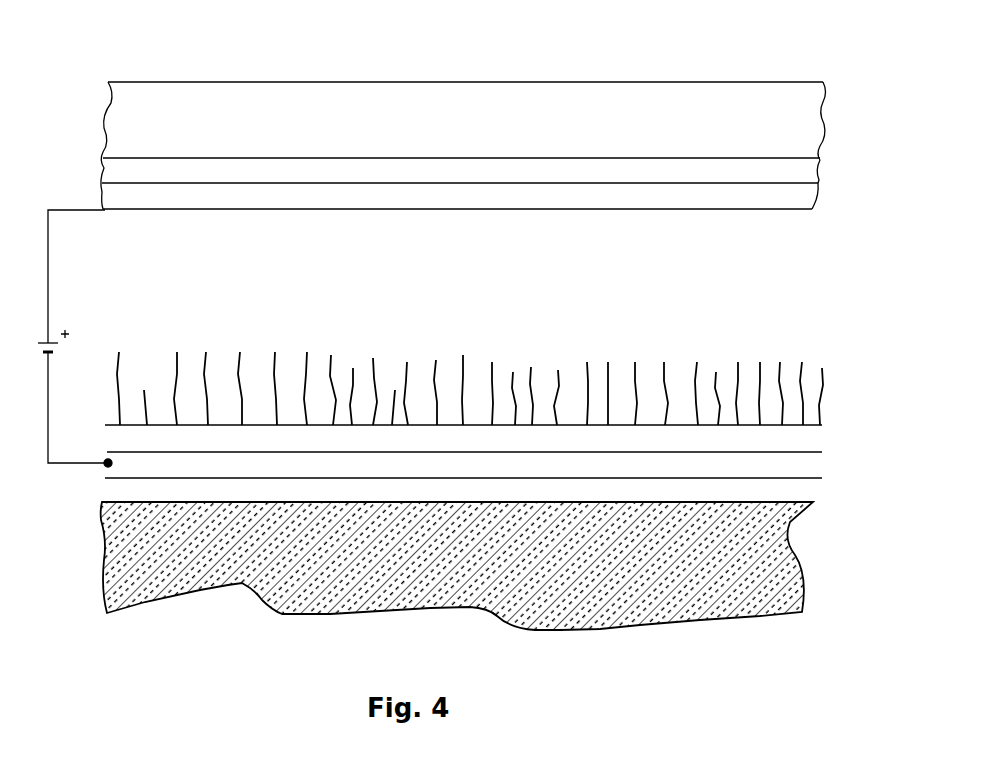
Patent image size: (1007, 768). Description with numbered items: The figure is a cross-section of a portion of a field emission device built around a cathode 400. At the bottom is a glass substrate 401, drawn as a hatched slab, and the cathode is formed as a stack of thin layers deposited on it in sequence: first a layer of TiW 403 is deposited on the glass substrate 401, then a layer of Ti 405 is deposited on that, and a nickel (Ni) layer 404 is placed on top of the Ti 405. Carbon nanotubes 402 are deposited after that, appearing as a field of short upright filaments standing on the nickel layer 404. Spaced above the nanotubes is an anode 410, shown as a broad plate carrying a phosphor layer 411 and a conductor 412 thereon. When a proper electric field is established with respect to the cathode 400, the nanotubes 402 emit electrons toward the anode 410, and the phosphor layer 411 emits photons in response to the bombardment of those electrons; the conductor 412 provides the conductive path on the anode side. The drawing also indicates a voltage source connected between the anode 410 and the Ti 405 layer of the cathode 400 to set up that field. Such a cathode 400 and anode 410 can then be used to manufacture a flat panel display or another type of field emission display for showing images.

The cathode 400 is at (615, 299).
The glass substrate 401 is at (704, 609).
The carbon nanotubes 402 is at (741, 338).
The layer of TiW 403 is at (812, 487).
The nickel (Ni) layer 404 is at (806, 438).
The layer of Ti 405 is at (98, 472).
The anode 410 is at (544, 61).
The phosphor layer 411 is at (822, 166).
The conductor 412 is at (812, 209).